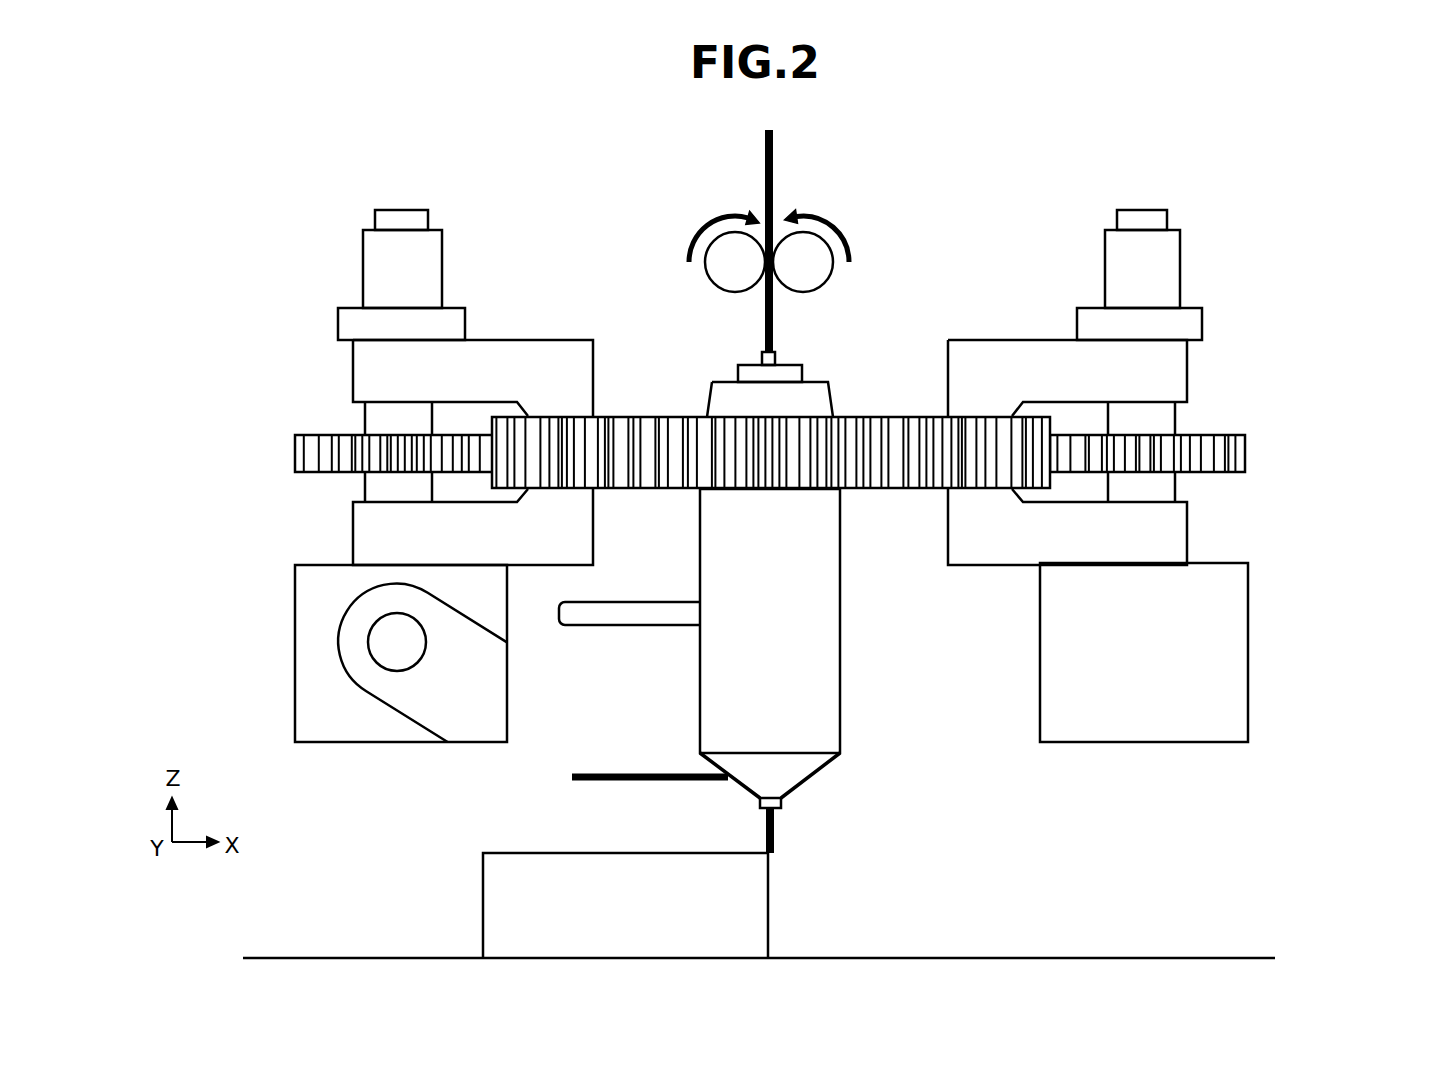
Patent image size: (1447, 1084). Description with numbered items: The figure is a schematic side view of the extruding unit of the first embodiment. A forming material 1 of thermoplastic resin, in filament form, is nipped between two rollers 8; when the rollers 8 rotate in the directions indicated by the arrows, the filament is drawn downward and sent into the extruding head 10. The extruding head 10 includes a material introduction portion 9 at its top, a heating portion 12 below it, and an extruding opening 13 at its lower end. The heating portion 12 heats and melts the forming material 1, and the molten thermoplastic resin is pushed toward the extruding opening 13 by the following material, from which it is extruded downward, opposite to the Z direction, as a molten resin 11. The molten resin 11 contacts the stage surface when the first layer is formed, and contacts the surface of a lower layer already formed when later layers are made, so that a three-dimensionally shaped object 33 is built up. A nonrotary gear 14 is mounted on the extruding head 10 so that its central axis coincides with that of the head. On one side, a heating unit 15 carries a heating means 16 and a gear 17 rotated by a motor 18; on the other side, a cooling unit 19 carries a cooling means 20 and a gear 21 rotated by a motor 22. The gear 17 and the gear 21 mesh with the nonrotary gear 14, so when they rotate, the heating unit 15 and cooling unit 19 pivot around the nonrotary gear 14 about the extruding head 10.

The forming material 1 is at (773, 161).
The rollers 8 is at (752, 220).
The material introduction portion 9 is at (776, 358).
The extruding head 10 is at (830, 397).
The molten resin 11 is at (777, 838).
The heating portion 12 is at (841, 668).
The extruding opening 13 is at (784, 803).
The nonrotary gear 14 is at (660, 416).
The heating unit 15 is at (333, 473).
The heating means 16 is at (353, 653).
The gear 17 is at (294, 453).
The motor 18 is at (362, 297).
The cooling unit 19 is at (1195, 476).
The cooling means 20 is at (1190, 652).
The gear 21 is at (1246, 453).
The motor 22 is at (1182, 283).
The three-dimensionally shaped object 33 is at (760, 910).